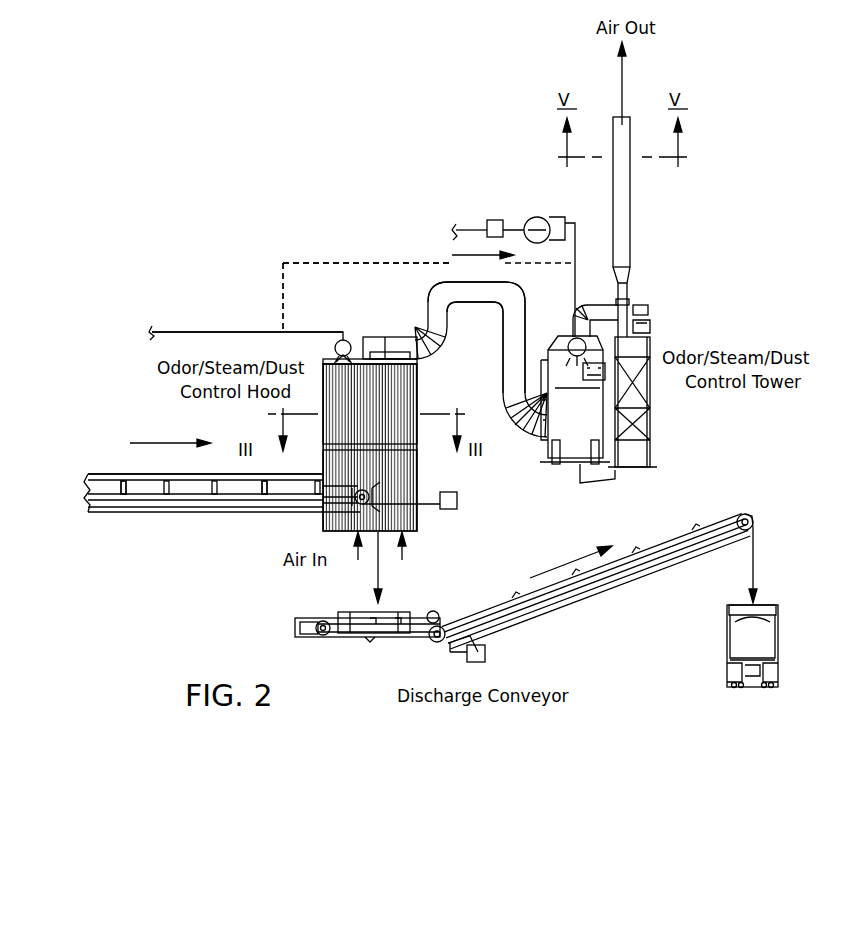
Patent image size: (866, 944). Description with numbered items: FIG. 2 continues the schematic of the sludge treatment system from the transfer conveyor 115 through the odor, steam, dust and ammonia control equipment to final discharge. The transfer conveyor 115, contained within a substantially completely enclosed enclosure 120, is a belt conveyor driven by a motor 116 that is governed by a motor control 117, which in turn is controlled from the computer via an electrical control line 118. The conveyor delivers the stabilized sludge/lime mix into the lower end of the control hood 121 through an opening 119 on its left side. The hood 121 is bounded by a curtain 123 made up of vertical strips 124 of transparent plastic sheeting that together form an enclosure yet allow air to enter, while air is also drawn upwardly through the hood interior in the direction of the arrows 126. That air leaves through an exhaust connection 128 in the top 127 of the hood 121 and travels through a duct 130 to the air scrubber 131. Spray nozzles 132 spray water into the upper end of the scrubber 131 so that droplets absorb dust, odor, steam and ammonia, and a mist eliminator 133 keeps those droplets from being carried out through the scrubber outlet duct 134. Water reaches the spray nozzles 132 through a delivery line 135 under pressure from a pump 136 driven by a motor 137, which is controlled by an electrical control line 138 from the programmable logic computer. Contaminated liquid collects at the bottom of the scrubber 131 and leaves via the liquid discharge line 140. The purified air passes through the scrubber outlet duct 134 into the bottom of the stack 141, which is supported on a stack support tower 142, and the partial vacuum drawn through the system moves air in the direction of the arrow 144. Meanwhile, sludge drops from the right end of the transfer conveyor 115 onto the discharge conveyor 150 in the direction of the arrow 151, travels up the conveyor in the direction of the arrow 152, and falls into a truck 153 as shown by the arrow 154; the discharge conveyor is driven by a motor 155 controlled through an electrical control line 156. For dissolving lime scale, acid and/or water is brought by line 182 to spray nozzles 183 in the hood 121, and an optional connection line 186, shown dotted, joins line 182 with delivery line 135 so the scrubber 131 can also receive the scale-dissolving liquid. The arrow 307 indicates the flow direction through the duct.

The transfer conveyor 115 is at (176, 522).
The motor 116 is at (235, 484).
The motor control 117 is at (445, 510).
The electrical control line 118 is at (470, 490).
The opening 119 is at (320, 515).
The enclosure 120 is at (105, 468).
The control hood 121 is at (418, 412).
The curtain 123 is at (385, 392).
The vertical strips 124 is at (395, 515).
The arrows 126 is at (402, 565).
The top 127 is at (348, 340).
The exhaust connection 128 is at (368, 336).
The duct 130 is at (512, 292).
The air scrubber 131 is at (585, 425).
The spray nozzles 132 is at (570, 348).
The mist eliminator 133 is at (640, 320).
The scrubber outlet duct 134 is at (600, 310).
The delivery line 135 is at (576, 250).
The pump 136 is at (530, 222).
The motor 137 is at (493, 220).
The electrical control line 138 is at (452, 230).
The liquid discharge line 140 is at (612, 481).
The stack 141 is at (631, 225).
The stack support tower 142 is at (652, 447).
The arrow 144 is at (625, 75).
The discharge conveyor 150 is at (338, 616).
The arrow 151 is at (380, 580).
The arrow 152 is at (578, 568).
The truck 153 is at (782, 632).
The arrow 154 is at (756, 552).
The motor 155 is at (495, 642).
The electrical control line 156 is at (503, 652).
The line 182 is at (160, 330).
The spray nozzles 183 is at (336, 342).
The optional connection line 186 is at (283, 263).
The duct air flow 307 is at (450, 265).